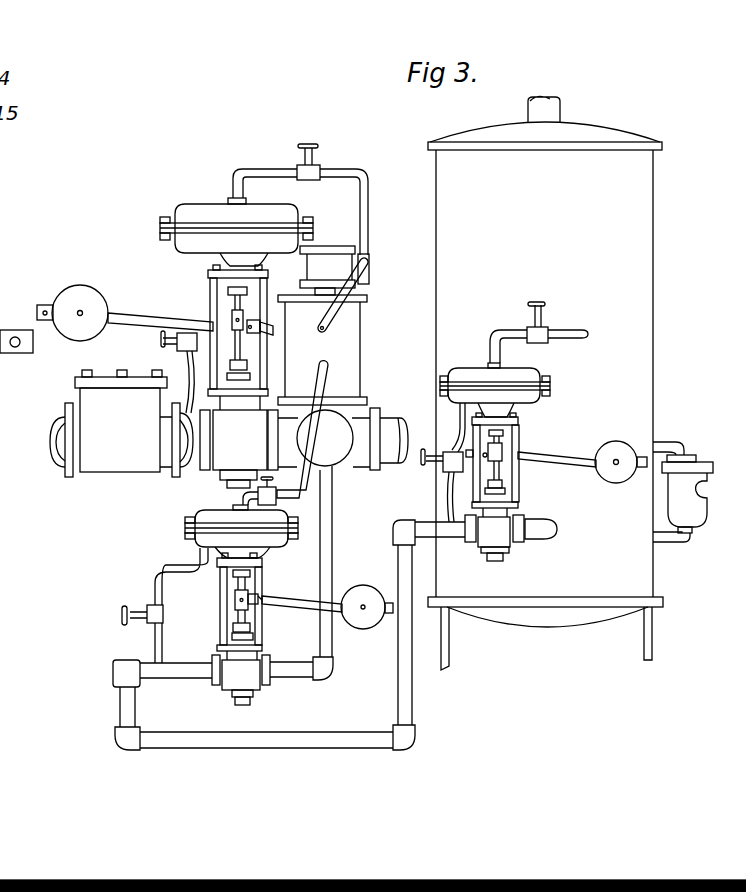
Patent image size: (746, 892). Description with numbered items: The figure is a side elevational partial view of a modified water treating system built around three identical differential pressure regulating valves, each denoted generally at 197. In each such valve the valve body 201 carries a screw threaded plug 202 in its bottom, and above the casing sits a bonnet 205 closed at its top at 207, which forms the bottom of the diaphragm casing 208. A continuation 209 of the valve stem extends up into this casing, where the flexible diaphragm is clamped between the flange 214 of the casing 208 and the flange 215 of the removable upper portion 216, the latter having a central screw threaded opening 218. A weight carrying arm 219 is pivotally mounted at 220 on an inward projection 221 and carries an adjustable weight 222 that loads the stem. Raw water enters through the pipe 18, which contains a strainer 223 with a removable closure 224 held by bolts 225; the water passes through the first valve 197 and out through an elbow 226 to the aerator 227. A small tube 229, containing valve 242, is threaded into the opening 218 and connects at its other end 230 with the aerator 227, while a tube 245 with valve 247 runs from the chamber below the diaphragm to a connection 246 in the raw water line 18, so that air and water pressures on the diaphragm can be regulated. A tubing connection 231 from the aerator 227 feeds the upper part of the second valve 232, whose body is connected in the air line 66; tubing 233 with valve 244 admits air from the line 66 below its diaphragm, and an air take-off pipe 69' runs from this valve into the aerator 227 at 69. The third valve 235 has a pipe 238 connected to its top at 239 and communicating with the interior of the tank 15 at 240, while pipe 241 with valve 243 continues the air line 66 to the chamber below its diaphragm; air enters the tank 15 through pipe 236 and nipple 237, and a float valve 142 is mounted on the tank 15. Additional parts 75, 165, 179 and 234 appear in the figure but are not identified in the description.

The tank 15 is at (654, 260).
The raw water inlet pipe 18 is at (56, 463).
The air line 66 is at (115, 682).
The aerator connection point 69 is at (341, 500).
The air take-off pipe 69' is at (347, 588).
The flange 75 is at (200, 465).
The float valve 142 is at (684, 538).
The drain pipe 165 is at (681, 552).
The nut 179 is at (262, 560).
The differential pressure regulating valve 197 is at (183, 207).
The valve body 201 is at (222, 476).
The screw threaded plug 202 is at (234, 489).
The bonnet 205 is at (265, 646).
The bonnet top 207 is at (208, 278).
The diaphragm casing 208 is at (178, 250).
The valve stem extension 209 is at (236, 304).
The flange 214 is at (160, 222).
The flange 215 is at (158, 236).
The removable upper portion of diaphragm casing 216 is at (203, 204).
The screw threaded opening 218 is at (247, 200).
The weight carrying arm 219 is at (116, 312).
The pivot 220 is at (261, 328).
The inward projection 221 is at (262, 333).
The weight 222 is at (368, 637).
The strainer 223 is at (117, 472).
The removable closure 224 is at (76, 381).
The bolts 225 is at (122, 361).
The elbow 226 is at (327, 468).
The aerator 227 is at (357, 352).
The tube 229 is at (263, 170).
The tube end connection 230 is at (330, 332).
The tubing connection 231 is at (323, 373).
The valve 232 is at (250, 502).
The tube 233 is at (181, 605).
The elbow 234 is at (331, 679).
The valve 235 is at (519, 505).
The air pipe 236 is at (526, 549).
The nipple 237 is at (548, 539).
The pipe 238 is at (506, 332).
The top connection 239 is at (491, 364).
The tank connection 240 is at (590, 334).
The pipe 241 is at (462, 422).
The valve 242 is at (315, 167).
The valve 243 is at (448, 466).
The valve 244 is at (163, 614).
The tube 245 is at (188, 361).
The connection 246 is at (176, 420).
The valve 247 is at (165, 338).